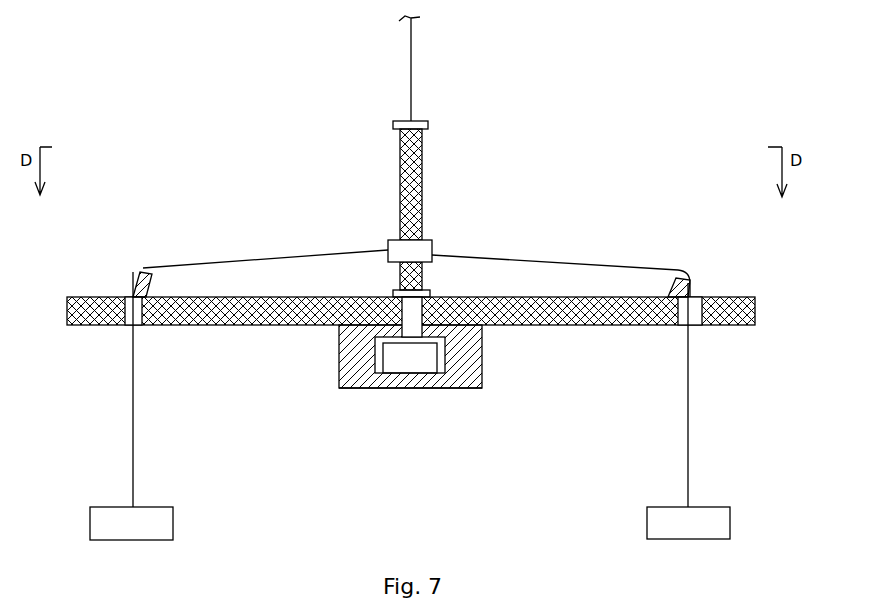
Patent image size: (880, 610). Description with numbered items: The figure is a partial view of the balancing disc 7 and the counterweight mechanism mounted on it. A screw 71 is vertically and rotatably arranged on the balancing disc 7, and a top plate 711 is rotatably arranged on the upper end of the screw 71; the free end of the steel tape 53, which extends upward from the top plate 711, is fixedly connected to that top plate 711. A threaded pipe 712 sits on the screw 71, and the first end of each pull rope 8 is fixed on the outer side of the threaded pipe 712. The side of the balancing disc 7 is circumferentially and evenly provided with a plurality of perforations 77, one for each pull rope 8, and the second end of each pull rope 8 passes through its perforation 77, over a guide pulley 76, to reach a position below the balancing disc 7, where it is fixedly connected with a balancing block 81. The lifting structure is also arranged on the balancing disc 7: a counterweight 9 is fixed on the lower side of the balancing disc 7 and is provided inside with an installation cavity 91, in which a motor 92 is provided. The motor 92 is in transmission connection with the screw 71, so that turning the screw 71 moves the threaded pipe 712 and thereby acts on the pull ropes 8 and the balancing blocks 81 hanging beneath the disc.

The balancing disc 7 is at (210, 325).
The perforation 77 is at (125, 297).
The guide pulley 76 is at (140, 270).
The pull rope 8 is at (133, 382).
The balancing block 81 is at (113, 520).
The counterweight 9 is at (455, 390).
The installation cavity 91 is at (358, 388).
The motor 92 is at (410, 360).
The screw 71 is at (422, 180).
The top plate 711 is at (393, 123).
The threaded pipe 712 is at (388, 245).
The steel tape 53 is at (411, 70).